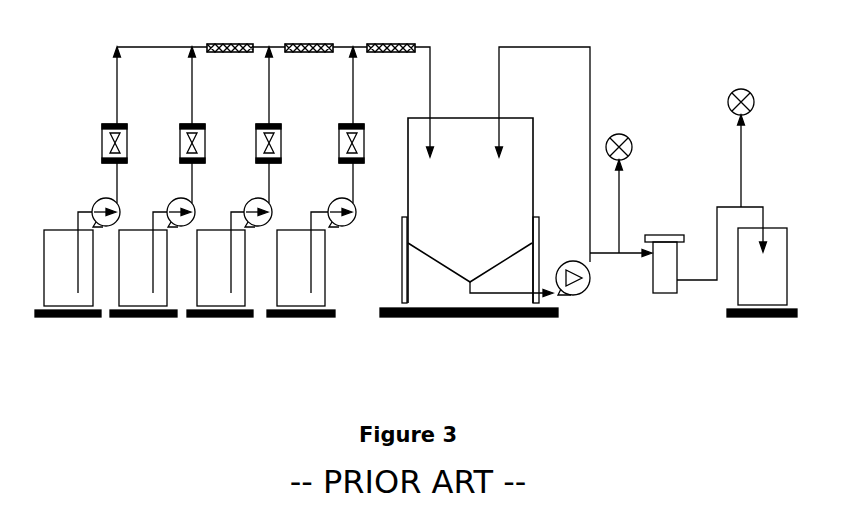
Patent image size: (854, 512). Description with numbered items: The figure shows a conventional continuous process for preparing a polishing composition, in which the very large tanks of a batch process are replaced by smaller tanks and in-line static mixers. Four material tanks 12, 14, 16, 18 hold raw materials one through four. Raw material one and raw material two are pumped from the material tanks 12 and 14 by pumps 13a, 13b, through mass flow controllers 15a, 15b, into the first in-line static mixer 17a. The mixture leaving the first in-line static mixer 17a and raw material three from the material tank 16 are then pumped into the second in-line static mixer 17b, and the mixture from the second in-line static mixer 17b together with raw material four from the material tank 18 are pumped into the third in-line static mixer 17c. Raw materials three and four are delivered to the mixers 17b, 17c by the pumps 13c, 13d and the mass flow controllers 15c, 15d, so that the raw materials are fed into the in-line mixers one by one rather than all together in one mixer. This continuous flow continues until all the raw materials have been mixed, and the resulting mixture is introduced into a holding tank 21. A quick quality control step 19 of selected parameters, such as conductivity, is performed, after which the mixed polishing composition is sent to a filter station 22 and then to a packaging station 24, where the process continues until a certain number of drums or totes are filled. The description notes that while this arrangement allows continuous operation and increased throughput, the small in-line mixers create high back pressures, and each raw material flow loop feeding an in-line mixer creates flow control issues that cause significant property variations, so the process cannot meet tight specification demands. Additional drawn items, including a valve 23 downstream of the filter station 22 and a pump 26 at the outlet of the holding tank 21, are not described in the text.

The material tank 12 is at (68, 277).
The material tank 14 is at (143, 277).
The material tank 16 is at (220, 277).
The material tank 18 is at (301, 277).
The pump 13a is at (95, 195).
The pump 13b is at (177, 195).
The pump 13c is at (251, 195).
The pump 13d is at (333, 195).
The mass flow controller 15a is at (92, 105).
The mass flow controller 15b is at (174, 105).
The mass flow controller 15c is at (249, 105).
The mass flow controller 15d is at (330, 105).
The first in-line static mixer 17a is at (230, 33).
The second in-line static mixer 17b is at (309, 33).
The third in-line static mixer 17c is at (391, 33).
The quick quality control step 19 is at (633, 193).
The holding tank 21 is at (469, 217).
The filter station 22 is at (664, 249).
The vent valve 23 is at (753, 148).
The packaging station 24 is at (762, 272).
The transfer pump 26 is at (587, 282).